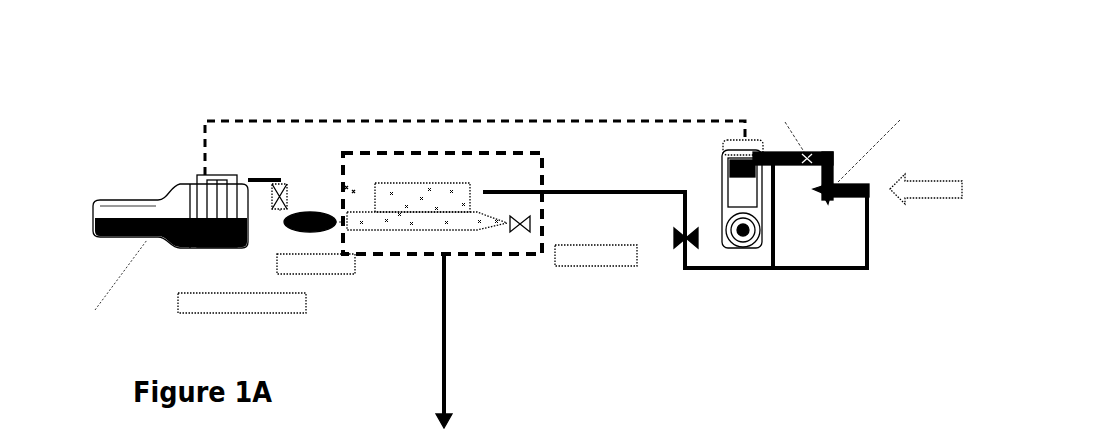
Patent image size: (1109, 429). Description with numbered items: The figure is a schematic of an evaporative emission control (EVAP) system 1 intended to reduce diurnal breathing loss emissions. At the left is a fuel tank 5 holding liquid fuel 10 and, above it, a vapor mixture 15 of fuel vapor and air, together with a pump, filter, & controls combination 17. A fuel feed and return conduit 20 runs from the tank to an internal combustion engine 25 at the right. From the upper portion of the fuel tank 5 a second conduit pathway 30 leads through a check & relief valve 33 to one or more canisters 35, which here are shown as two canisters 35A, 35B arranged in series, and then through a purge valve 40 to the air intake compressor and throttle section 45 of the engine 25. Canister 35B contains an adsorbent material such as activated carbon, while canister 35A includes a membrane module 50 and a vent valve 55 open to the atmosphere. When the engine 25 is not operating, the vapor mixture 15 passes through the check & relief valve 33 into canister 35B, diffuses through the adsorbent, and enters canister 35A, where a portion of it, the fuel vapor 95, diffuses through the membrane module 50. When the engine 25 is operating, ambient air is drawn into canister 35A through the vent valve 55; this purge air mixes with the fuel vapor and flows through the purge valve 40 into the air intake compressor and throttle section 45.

The EVAP system 1 is at (388, 89).
The fuel tank 5 is at (149, 168).
The fuel 10 is at (127, 235).
The vapor mixture 15 is at (135, 200).
The pump, filter, & controls combination 17 is at (187, 217).
The fuel feed and return conduit 20 is at (592, 121).
The internal combustion engine 25 is at (726, 174).
The second conduit pathway 30 is at (243, 172).
The check & relief valve 33 is at (274, 210).
The canisters 35 is at (515, 303).
The canister 35A is at (470, 233).
The canister 35B is at (314, 233).
The purge valve 40 is at (676, 232).
The air intake compressor and throttle section 45 is at (940, 105).
The membrane module 50 is at (452, 214).
The vent valve 55 is at (393, 177).
The fuel vapor 95 is at (412, 190).